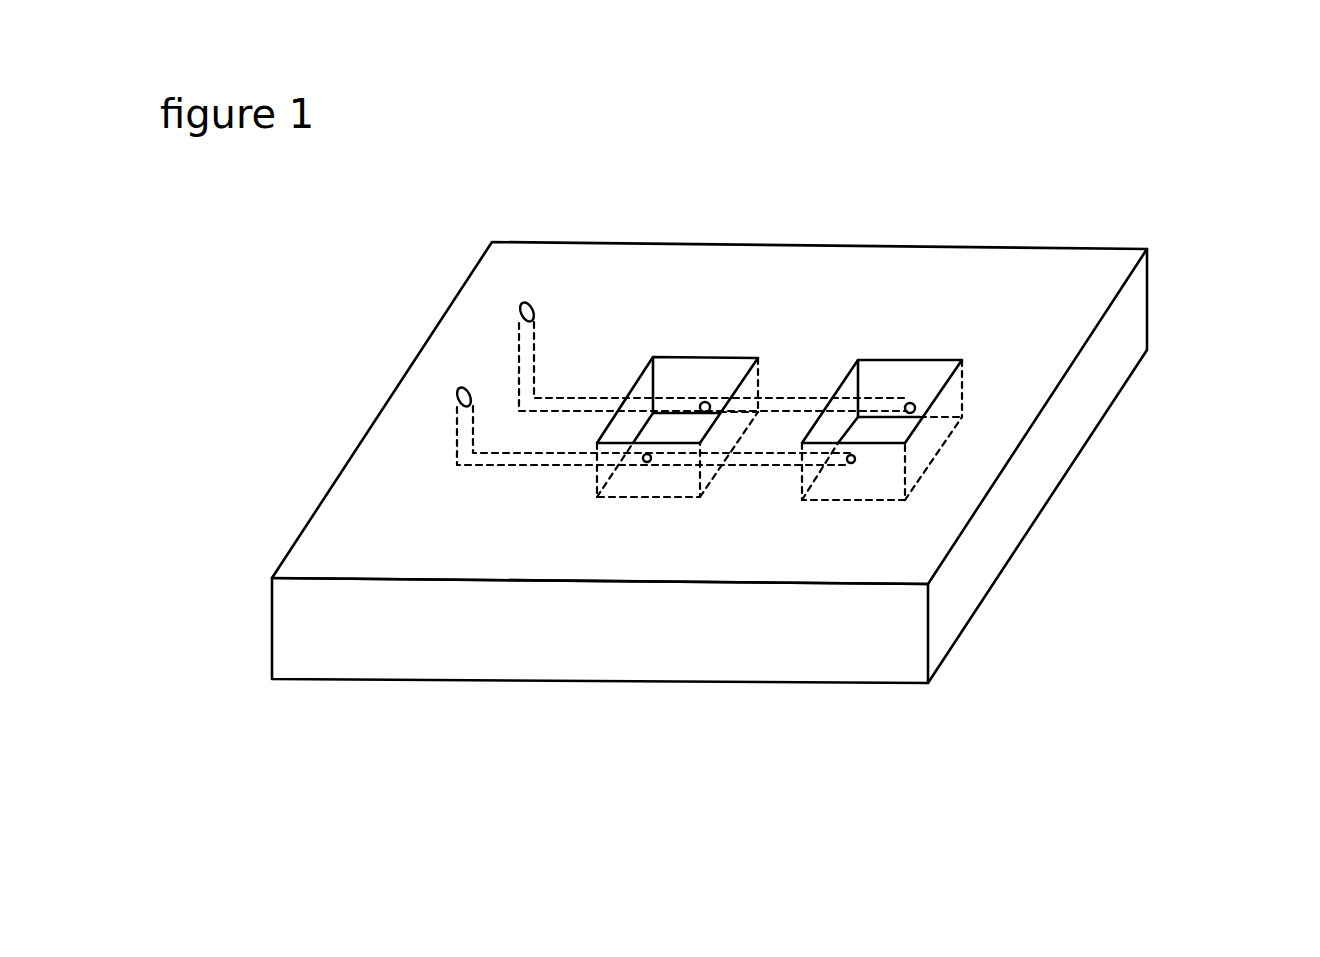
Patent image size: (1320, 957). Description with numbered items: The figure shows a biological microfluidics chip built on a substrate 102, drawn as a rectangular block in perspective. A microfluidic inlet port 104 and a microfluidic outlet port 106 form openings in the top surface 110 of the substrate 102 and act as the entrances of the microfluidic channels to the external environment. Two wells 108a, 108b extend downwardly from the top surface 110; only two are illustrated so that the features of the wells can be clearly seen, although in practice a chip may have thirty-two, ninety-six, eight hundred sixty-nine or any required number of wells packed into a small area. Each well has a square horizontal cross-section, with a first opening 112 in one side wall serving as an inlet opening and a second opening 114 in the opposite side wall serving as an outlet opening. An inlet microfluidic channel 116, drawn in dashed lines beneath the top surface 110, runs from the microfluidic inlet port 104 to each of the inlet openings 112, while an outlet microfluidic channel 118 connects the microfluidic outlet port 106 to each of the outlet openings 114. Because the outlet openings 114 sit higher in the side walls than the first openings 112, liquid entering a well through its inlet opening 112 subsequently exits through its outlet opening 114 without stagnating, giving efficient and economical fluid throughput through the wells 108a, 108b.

The substrate 102 is at (796, 407).
The microfluidic inlet port 104 is at (531, 302).
The microfluidic outlet port 106 is at (457, 397).
The well 108a is at (740, 357).
The well 108b is at (907, 358).
The top surface 110 is at (1047, 323).
The first opening 112 is at (705, 400).
The second opening 114 is at (650, 462).
The inlet microfluidic channel 116 is at (535, 342).
The outlet microfluidic channel 118 is at (509, 466).